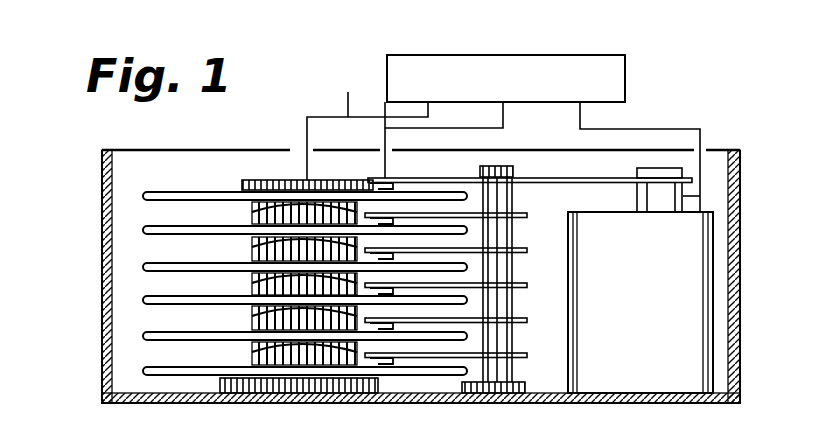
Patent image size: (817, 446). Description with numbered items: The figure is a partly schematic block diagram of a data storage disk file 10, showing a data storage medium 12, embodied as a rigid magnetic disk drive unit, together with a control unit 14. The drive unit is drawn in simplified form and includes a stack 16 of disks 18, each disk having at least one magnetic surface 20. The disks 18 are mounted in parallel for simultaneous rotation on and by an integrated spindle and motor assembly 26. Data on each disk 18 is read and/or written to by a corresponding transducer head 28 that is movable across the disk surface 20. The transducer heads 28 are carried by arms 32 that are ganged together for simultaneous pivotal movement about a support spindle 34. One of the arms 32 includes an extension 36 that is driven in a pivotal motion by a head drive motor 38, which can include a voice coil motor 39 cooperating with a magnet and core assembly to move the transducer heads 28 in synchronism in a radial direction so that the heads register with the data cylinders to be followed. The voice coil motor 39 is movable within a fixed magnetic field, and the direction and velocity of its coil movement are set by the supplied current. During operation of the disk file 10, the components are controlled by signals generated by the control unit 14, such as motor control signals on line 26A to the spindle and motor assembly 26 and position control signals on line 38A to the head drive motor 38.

The data storage disk file 10 is at (716, 70).
The data storage medium 12 is at (263, 137).
The control unit 14 is at (626, 79).
The stack 16 is at (207, 180).
The disks 18 is at (143, 267).
The magnetic surface 20 is at (158, 191).
The integrated spindle and motor assembly 26 is at (298, 352).
The line 26A is at (348, 100).
The transducer head 28 is at (384, 176).
The arms 32 is at (527, 285).
The support spindle 34 is at (493, 386).
The extension 36 is at (572, 177).
The head drive motor 38 is at (632, 372).
The line 38A is at (615, 129).
The voice coil motor 39 is at (700, 196).